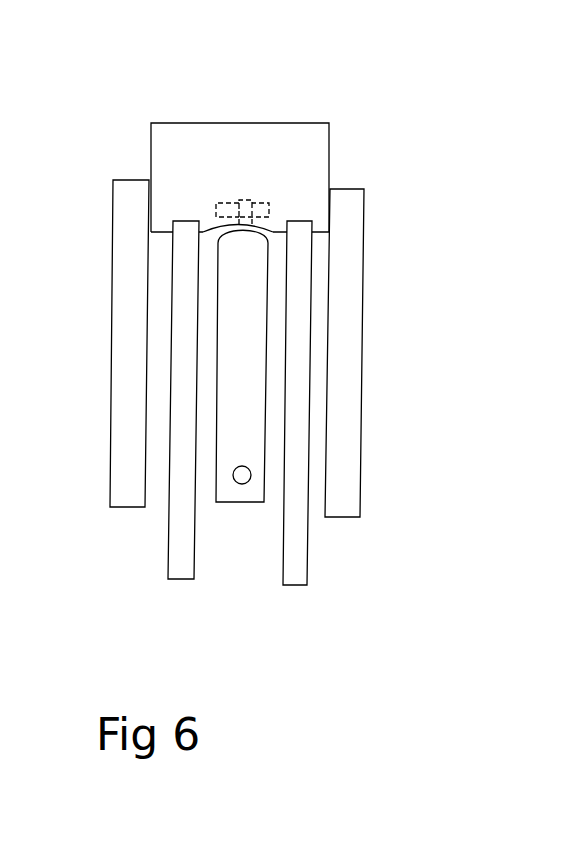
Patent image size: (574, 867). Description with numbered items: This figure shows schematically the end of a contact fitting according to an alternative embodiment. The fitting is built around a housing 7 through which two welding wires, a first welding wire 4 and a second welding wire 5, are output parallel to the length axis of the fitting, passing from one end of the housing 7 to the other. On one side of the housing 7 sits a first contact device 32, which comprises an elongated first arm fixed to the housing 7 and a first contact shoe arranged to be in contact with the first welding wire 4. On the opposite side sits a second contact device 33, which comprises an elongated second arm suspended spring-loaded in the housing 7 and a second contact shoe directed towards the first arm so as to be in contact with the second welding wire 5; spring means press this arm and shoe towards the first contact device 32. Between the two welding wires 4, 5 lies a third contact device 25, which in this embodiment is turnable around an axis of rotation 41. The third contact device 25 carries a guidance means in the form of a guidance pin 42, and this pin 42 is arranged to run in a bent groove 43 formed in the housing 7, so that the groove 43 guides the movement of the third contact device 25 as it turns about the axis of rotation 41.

The housing 7 is at (232, 148).
The first contact device 32 is at (127, 350).
The second contact device 33 is at (348, 302).
The first welding wire 4 is at (177, 552).
The second welding wire 5 is at (292, 554).
The third contact device 25 is at (224, 489).
The axis of rotation 41 is at (250, 471).
The guidance pin 42 is at (257, 199).
The bent groove 43 is at (226, 210).